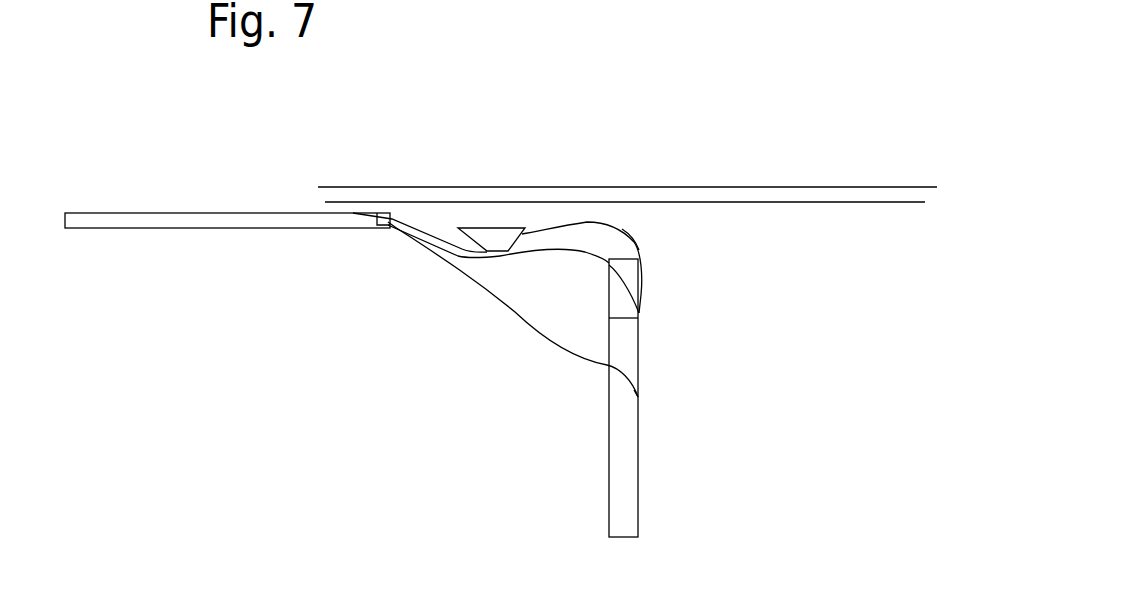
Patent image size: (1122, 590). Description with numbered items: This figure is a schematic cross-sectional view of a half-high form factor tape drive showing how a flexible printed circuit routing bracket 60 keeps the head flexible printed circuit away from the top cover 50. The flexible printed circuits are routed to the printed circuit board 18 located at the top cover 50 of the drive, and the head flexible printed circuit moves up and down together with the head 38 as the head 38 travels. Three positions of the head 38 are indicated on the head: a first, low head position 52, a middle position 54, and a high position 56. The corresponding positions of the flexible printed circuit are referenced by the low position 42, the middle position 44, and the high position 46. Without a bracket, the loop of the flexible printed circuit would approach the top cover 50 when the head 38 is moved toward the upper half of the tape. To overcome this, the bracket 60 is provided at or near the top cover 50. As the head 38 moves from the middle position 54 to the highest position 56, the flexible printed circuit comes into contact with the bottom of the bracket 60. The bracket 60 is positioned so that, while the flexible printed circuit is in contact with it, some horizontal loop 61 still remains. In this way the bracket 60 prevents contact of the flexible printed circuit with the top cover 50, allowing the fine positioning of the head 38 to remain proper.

The printed circuit board 18 is at (172, 216).
The top cover 50 is at (437, 190).
The flexible printed circuit routing bracket 60 is at (505, 220).
The flexible printed circuit position 46 is at (582, 222).
The flexible printed circuit position 44 is at (552, 249).
The flexible printed circuit position 42 is at (512, 316).
The head 38 is at (608, 492).
The high position 56 is at (644, 271).
The middle position 54 is at (639, 318).
The low head position 52 is at (639, 397).
The horizontal loop 61 is at (630, 239).